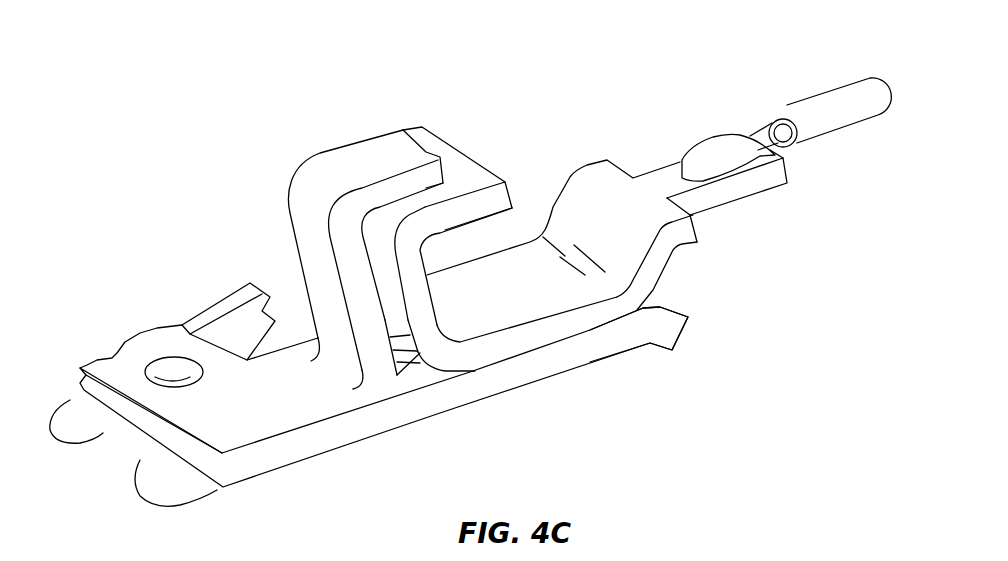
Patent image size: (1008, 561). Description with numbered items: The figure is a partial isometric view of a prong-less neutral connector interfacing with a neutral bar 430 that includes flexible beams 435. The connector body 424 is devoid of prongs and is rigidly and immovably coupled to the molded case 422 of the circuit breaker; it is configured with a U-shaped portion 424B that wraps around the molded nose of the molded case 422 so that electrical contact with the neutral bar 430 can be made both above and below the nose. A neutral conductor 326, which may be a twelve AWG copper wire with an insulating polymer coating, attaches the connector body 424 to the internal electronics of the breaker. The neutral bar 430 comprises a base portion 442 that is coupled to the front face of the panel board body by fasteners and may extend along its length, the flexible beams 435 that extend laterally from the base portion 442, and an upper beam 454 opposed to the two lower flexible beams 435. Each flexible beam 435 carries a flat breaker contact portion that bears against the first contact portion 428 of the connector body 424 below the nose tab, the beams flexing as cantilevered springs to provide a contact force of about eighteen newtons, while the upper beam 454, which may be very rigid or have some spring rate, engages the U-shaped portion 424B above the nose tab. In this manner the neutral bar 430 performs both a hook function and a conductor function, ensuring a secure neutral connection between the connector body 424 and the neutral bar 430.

The neutral conductor 326 is at (813, 100).
The molded case 422 is at (468, 150).
The connector body 424 is at (673, 258).
The U-shaped portion 424B is at (450, 253).
The first contact portion 428 is at (543, 347).
The neutral bar 430 is at (323, 460).
The flexible beams 435 is at (407, 357).
The base portion 442 is at (107, 433).
The upper beam 454 is at (350, 143).